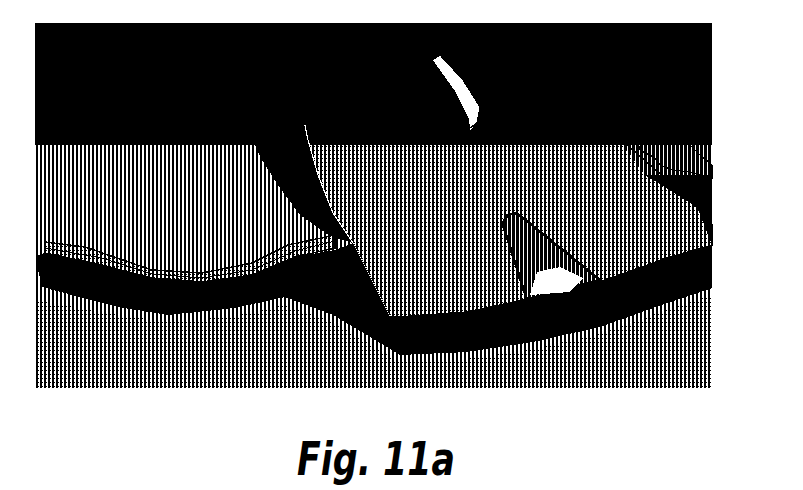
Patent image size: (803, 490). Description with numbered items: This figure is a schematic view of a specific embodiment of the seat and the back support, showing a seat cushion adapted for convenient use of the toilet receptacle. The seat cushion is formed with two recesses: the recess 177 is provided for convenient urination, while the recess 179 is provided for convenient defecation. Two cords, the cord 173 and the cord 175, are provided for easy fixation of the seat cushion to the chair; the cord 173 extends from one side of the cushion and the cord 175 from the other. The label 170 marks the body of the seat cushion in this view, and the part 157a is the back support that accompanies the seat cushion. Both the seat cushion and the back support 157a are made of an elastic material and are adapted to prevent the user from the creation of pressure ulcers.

The plate 170 is at (460, 288).
The cord 173 is at (152, 303).
The cord 175 is at (672, 140).
The recess 177 is at (553, 265).
The recess 179 is at (407, 84).
The back support 157a is at (316, 328).